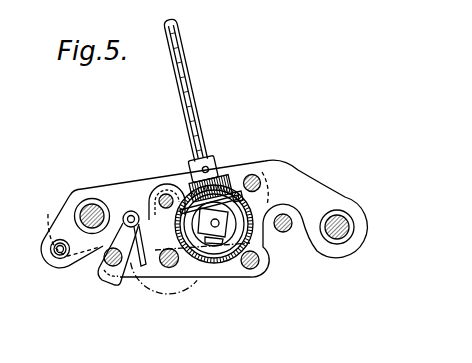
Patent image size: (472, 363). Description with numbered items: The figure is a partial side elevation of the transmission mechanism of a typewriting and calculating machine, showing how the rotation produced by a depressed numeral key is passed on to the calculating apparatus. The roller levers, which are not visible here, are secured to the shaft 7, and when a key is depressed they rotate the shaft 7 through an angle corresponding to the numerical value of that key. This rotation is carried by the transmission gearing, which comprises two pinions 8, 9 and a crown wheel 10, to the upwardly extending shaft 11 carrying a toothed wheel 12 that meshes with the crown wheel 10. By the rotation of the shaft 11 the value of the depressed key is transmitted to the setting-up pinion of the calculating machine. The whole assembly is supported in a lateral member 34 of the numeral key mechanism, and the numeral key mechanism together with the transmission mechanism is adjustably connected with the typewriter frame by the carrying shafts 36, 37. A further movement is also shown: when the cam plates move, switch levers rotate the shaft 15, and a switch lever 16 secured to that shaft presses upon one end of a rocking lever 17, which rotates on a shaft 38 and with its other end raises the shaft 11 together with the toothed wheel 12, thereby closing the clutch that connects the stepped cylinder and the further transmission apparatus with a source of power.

The shaft 7 is at (168, 268).
The pinion 8 is at (190, 280).
The pinion 9 is at (252, 198).
The crown wheel 10 is at (226, 262).
The upwardly extending shaft 11 is at (199, 145).
The toothed wheel 12 is at (228, 171).
The shaft 15 is at (113, 272).
The switch lever 16 is at (121, 228).
The rocking lever 17 is at (152, 187).
The lateral member 34 is at (322, 193).
The carrying shaft 36 is at (339, 237).
The carrying shaft 37 is at (88, 204).
The shaft 38 is at (166, 192).